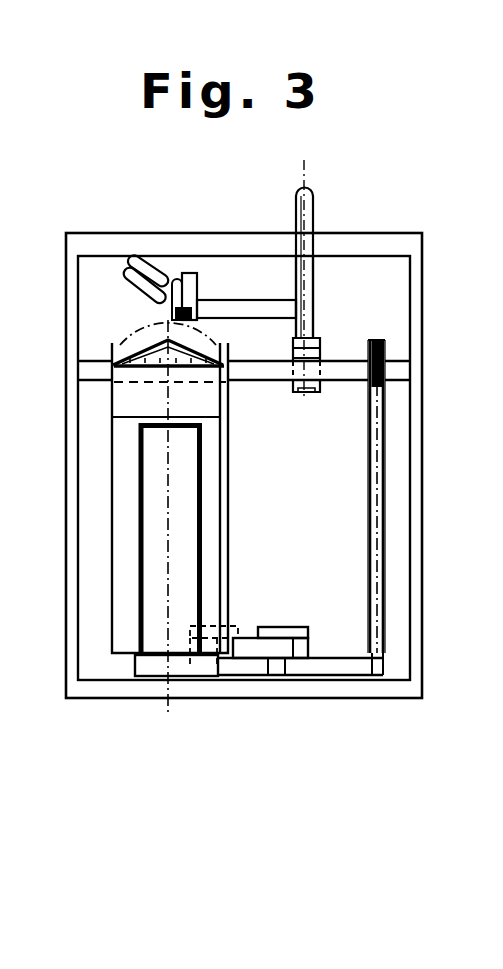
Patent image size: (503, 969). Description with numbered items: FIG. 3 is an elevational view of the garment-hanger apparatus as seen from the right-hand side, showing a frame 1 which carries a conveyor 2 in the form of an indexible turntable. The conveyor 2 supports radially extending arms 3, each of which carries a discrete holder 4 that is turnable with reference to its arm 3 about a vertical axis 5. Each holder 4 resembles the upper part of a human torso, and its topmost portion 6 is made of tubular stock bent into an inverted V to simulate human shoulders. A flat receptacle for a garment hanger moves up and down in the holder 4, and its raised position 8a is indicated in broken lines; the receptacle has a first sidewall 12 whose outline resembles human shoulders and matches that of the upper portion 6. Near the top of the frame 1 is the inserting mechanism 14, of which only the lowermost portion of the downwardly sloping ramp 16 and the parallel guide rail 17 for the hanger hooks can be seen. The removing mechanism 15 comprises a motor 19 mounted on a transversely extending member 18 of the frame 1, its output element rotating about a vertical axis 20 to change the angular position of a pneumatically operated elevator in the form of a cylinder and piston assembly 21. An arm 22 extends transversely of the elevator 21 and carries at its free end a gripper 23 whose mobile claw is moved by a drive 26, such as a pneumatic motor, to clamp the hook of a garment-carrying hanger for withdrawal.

The frame 1 is at (66, 431).
The conveyor 2 is at (268, 652).
The arm 3 is at (277, 627).
The holder 4 is at (113, 508).
The vertical axis 5 is at (170, 447).
The upper portion 6 is at (190, 357).
The raised position 8a is at (133, 333).
The first sidewall 12 is at (375, 350).
The inserting mechanism 14 is at (162, 262).
The removing mechanism 15 is at (271, 275).
The ramp 16 is at (126, 266).
The guide rail 17 is at (146, 258).
The transversely extending member 18 is at (335, 372).
The motor 19 is at (297, 393).
The vertical axis 20 is at (309, 393).
The cylinder and piston assembly 21 is at (311, 212).
The arm 22 is at (224, 297).
The gripper 23 is at (193, 267).
The drive 26 is at (176, 280).